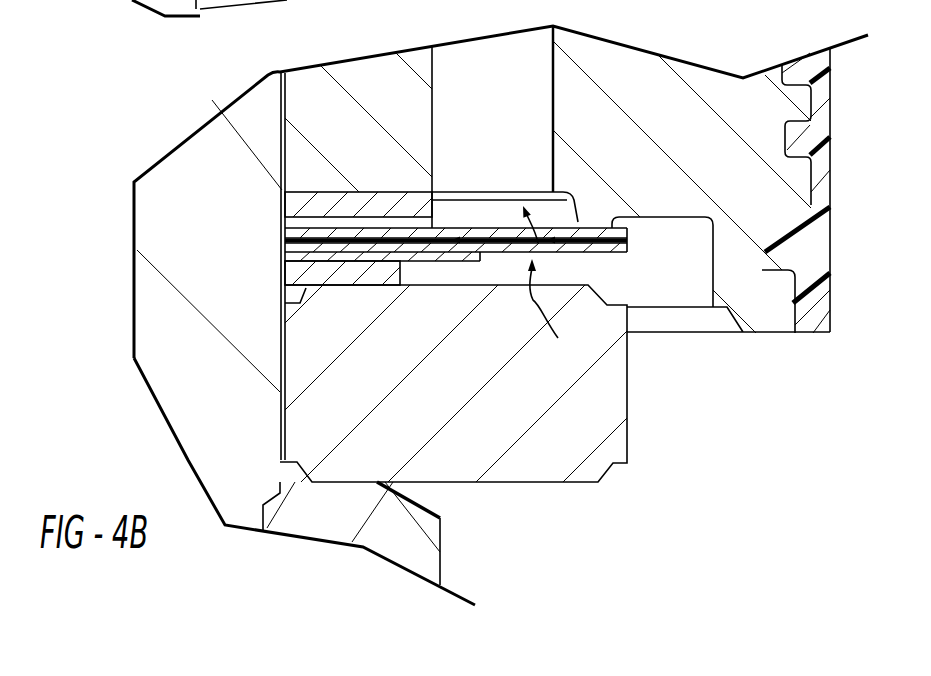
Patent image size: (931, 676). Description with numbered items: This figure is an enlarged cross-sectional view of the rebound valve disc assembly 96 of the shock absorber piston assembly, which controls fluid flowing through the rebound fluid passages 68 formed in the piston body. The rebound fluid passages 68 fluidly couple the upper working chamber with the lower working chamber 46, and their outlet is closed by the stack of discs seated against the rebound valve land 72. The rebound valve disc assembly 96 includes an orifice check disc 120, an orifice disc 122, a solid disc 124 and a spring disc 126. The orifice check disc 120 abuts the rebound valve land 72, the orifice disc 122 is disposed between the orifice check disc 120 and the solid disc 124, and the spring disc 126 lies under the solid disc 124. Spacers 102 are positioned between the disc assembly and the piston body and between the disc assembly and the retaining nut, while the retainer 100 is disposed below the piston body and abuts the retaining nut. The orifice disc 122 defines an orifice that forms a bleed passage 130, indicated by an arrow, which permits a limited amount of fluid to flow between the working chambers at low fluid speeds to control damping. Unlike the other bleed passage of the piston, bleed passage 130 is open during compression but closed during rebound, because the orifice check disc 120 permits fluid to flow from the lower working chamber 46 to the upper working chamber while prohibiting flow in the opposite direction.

The lower working chamber 46 is at (713, 533).
The rebound fluid passages 68 is at (510, 97).
The rebound valve land 72 is at (600, 225).
The rebound valve disc assembly 96 is at (549, 315).
The retainer 100 is at (627, 373).
The spacers 102 is at (302, 223).
The orifice check disc 120 is at (293, 232).
The orifice disc 122 is at (292, 241).
The solid disc 124 is at (296, 250).
The spring disc 126 is at (428, 255).
The bleed passage 130 is at (676, 282).